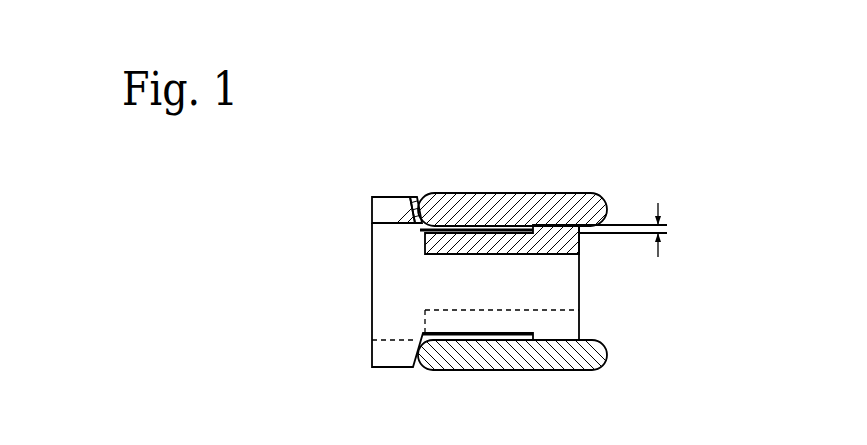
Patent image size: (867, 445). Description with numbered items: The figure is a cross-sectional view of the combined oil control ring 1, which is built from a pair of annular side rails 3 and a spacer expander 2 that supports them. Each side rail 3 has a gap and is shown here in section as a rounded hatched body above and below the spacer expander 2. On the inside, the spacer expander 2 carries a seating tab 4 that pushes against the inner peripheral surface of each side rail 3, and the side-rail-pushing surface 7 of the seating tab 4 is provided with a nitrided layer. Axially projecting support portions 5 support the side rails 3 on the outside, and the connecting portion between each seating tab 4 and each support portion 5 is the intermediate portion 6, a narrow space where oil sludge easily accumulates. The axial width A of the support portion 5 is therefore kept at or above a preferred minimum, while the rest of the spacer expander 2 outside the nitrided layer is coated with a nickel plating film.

The combined oil control ring 1 is at (668, 175).
The spacer expander 2 is at (392, 288).
The side rail 3 is at (597, 210).
The seating tab 4 is at (388, 207).
The support portion 5 is at (580, 240).
The intermediate portion 6 is at (470, 245).
The side-rail-pushing surface 7 is at (417, 203).
The axial width of the support portion A is at (669, 230).